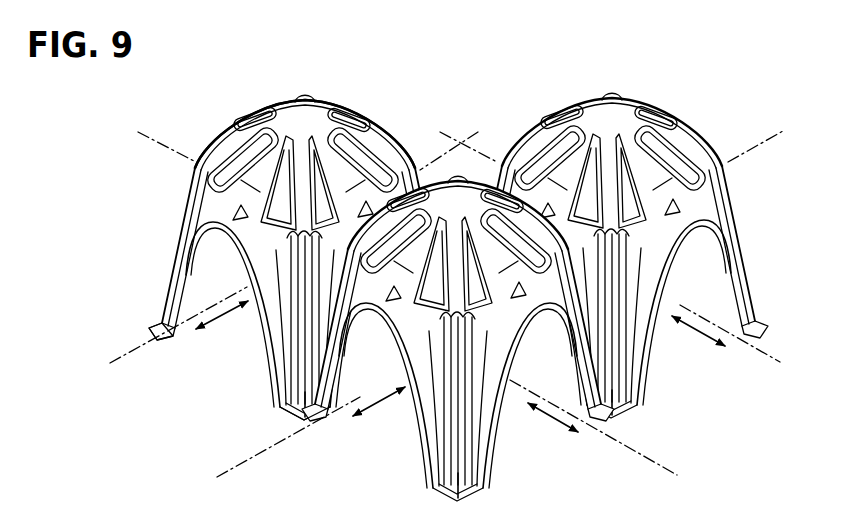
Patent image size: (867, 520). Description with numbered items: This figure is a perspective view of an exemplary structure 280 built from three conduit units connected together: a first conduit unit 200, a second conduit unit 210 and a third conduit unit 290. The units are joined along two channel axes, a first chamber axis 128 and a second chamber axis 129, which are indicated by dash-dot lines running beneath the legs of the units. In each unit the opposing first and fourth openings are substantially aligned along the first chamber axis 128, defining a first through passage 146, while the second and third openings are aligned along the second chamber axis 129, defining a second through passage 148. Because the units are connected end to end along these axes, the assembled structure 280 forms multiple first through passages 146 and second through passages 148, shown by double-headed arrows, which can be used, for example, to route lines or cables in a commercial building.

The structure 280 is at (168, 164).
The third conduit unit 290 is at (398, 142).
The first conduit unit 200 is at (460, 180).
The second conduit unit 210 is at (658, 104).
The first chamber axis 128 is at (152, 342).
The first through passage 146 is at (226, 318).
The second through passage 148 is at (545, 402).
The second chamber axis 129 is at (762, 348).